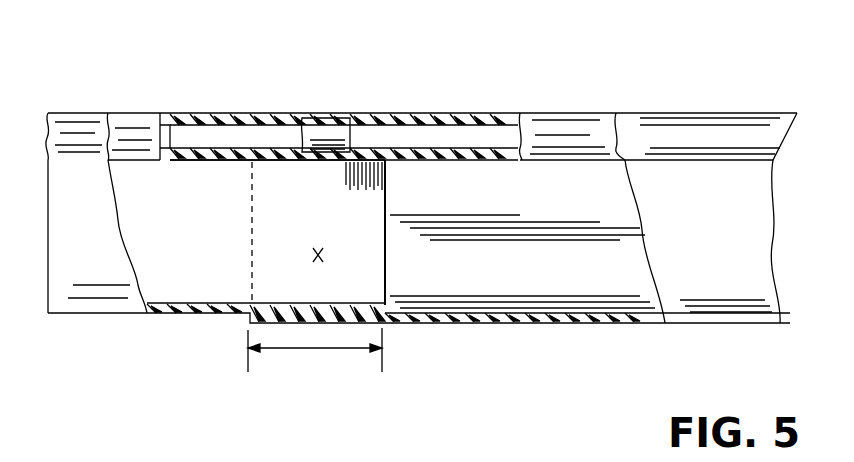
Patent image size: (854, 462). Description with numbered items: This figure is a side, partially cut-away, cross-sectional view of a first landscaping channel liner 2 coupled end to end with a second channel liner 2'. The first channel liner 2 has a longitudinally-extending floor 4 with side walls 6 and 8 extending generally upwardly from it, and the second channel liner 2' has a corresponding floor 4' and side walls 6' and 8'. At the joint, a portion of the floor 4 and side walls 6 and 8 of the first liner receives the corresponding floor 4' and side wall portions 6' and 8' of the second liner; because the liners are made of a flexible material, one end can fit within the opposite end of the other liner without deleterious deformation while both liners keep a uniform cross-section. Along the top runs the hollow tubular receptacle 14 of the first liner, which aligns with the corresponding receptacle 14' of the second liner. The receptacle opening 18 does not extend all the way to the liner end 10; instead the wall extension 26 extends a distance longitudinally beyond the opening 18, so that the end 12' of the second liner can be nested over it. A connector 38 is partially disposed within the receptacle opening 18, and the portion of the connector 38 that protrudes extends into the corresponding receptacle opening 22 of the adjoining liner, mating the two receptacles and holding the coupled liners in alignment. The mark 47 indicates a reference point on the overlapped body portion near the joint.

The landscaping channel liner 2 is at (139, 100).
The second channel liner 2' is at (602, 96).
The floor 4 is at (194, 335).
The floor of second channel liner 4' is at (519, 338).
The side wall 6 is at (104, 263).
The side wall of second channel liner 6' is at (730, 266).
The side wall 8 is at (277, 131).
The side wall of second channel liner 8' is at (527, 241).
The end 10 is at (389, 262).
The end of second channel liner 12' is at (217, 232).
The receptacle 14 is at (78, 182).
The receptacle of second channel liner 14' is at (706, 110).
The receptacle opening 18 is at (256, 165).
The receptacle opening 22 is at (253, 124).
The wall extension 26 is at (383, 203).
The connector 38 is at (335, 133).
The mark point 47 is at (318, 258).